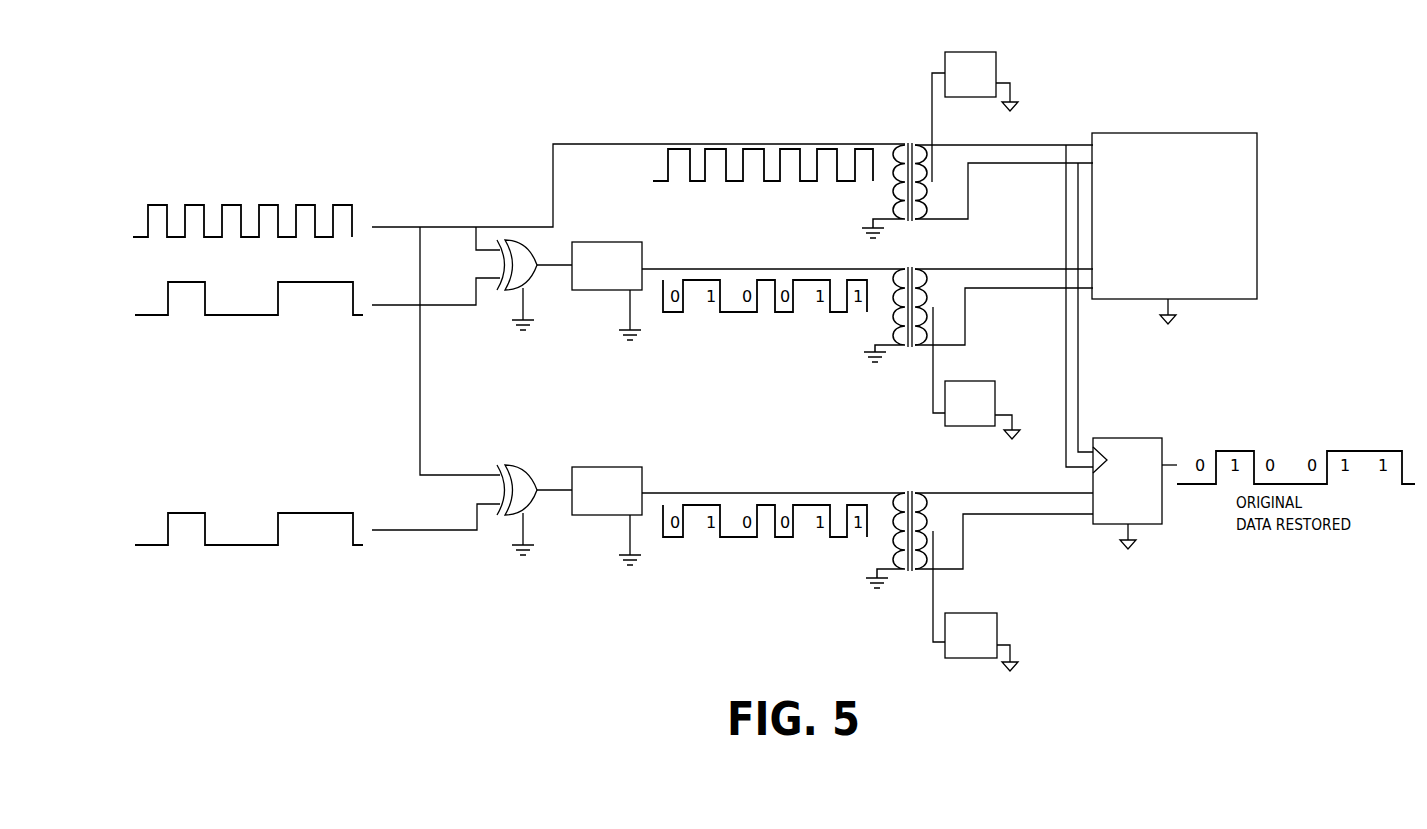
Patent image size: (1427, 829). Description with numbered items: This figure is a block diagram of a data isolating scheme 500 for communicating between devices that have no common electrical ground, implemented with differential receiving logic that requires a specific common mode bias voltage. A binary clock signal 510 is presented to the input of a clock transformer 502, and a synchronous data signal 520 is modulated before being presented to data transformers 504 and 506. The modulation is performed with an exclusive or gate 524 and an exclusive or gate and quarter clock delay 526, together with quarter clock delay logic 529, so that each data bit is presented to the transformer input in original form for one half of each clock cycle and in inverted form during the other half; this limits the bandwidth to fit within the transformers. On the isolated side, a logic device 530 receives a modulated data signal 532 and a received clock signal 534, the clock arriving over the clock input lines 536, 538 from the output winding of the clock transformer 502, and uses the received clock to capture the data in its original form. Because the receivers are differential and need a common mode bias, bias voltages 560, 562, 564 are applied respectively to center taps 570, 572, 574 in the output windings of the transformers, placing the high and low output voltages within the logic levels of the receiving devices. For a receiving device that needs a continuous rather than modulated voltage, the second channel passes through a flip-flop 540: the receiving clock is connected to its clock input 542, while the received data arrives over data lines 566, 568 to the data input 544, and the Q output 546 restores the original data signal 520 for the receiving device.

The data isolating scheme 500 is at (821, 113).
The clock transformer 502 is at (886, 165).
The data transformer 504 is at (884, 340).
The data transformer 506 is at (885, 566).
The clock signal 510 is at (202, 221).
The data signal 520 is at (208, 421).
The exclusive or gate 524 is at (533, 508).
The exclusive or gate and quarter clock delay 526 is at (533, 283).
The quarter clock delay logic 529 is at (620, 467).
The logic device 530 is at (1188, 229).
The modulated data signal 532 is at (948, 269).
The received clock signal 534 is at (994, 289).
The clock input line 536 is at (985, 145).
The clock input line 538 is at (992, 164).
The flip-flop 540 is at (1137, 481).
The clock input 542 is at (1113, 461).
The data input 544 is at (1116, 507).
The Q output 546 is at (1157, 466).
The bias voltage 560 is at (975, 52).
The bias voltage 562 is at (975, 381).
The bias voltage 564 is at (975, 613).
The data line 566 is at (994, 514).
The data line 568 is at (948, 493).
The center tap 570 is at (938, 146).
The center tap 572 is at (935, 341).
The center tap 574 is at (935, 567).